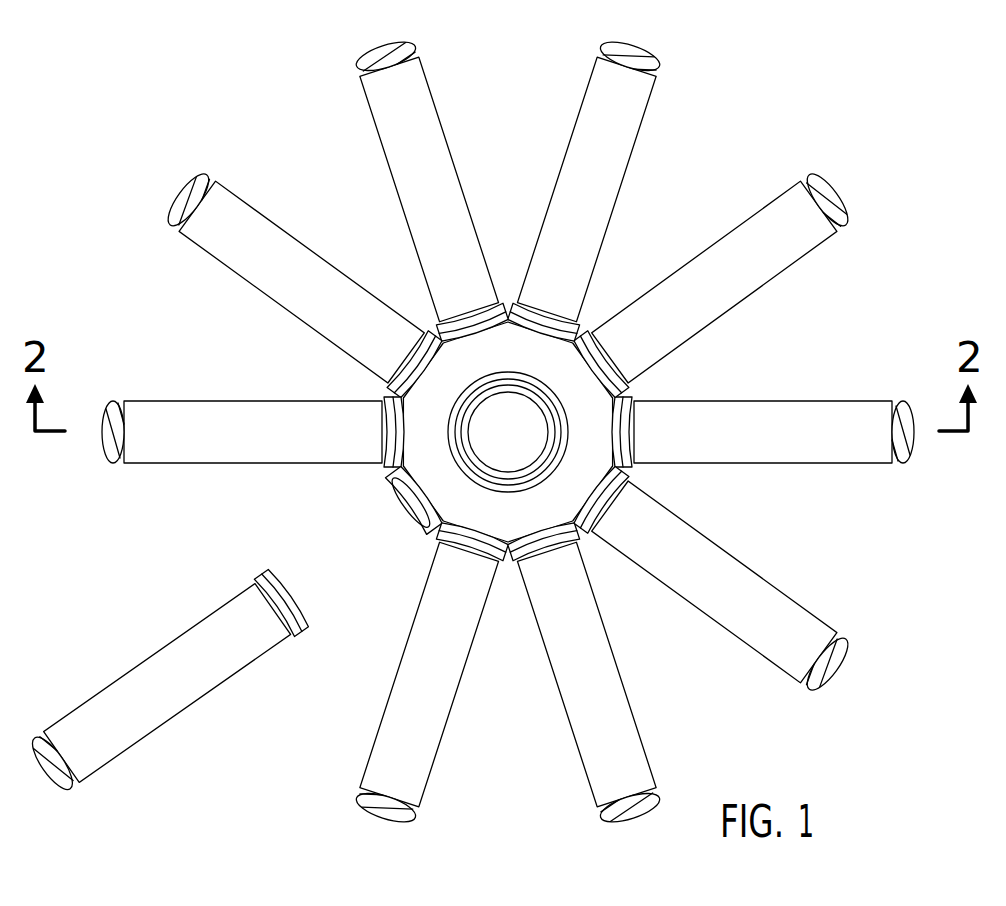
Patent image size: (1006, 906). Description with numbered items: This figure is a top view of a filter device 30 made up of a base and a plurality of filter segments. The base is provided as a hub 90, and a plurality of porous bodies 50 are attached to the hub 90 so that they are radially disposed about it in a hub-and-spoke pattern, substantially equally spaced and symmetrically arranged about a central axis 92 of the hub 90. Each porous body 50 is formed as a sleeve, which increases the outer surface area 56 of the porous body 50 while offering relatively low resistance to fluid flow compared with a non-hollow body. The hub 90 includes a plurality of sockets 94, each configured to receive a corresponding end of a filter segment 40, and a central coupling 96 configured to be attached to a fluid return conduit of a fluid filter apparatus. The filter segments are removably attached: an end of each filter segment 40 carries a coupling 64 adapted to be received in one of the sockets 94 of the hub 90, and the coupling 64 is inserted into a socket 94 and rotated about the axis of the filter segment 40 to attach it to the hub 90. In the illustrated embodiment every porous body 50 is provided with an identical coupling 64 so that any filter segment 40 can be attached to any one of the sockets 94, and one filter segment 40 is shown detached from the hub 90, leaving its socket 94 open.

The filter device 30 is at (508, 432).
The filter segment 40 is at (192, 678).
The porous body 50 is at (714, 256).
The outer surface area 56 is at (714, 282).
The coupling 64 is at (303, 618).
The hub 90 is at (676, 407).
The central axis 92 is at (508, 432).
The socket 94 is at (388, 495).
The central coupling 96 is at (533, 372).